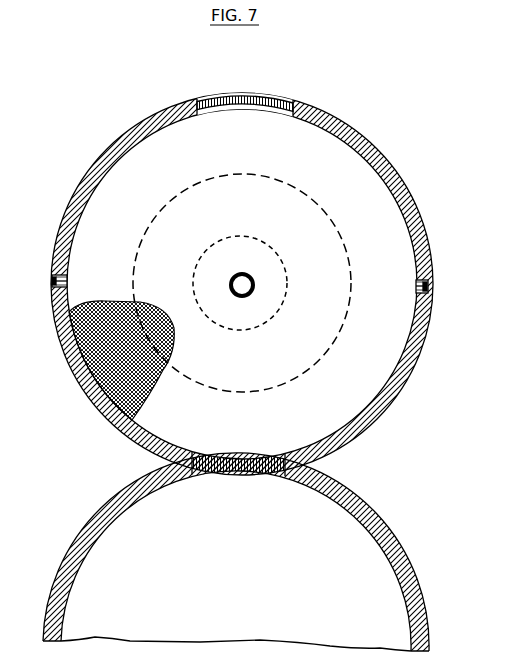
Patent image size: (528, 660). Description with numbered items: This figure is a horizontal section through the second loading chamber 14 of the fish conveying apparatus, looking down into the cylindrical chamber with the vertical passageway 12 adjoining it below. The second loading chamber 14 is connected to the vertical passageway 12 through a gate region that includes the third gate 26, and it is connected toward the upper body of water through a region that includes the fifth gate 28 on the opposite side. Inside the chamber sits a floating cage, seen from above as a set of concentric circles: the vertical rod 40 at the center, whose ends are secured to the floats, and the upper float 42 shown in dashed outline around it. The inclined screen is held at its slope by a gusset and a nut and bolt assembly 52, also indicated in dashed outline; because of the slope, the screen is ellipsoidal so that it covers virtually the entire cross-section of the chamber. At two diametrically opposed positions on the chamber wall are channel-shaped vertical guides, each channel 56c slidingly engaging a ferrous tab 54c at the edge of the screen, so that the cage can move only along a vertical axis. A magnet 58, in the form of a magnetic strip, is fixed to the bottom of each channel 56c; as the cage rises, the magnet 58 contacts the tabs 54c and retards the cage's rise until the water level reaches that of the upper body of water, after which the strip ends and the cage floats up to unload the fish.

The vertical passageway 12 is at (80, 567).
The second loading chamber 14 is at (145, 143).
The third gate 26 is at (251, 458).
The fifth gate 28 is at (250, 100).
The vertical rod 40 is at (232, 277).
The upper float 42 is at (331, 227).
The nut and bolt assembly 52 is at (200, 261).
The magnet 58 is at (55, 281).
The channel 56c is at (67, 277).
The tab 54c is at (67, 286).